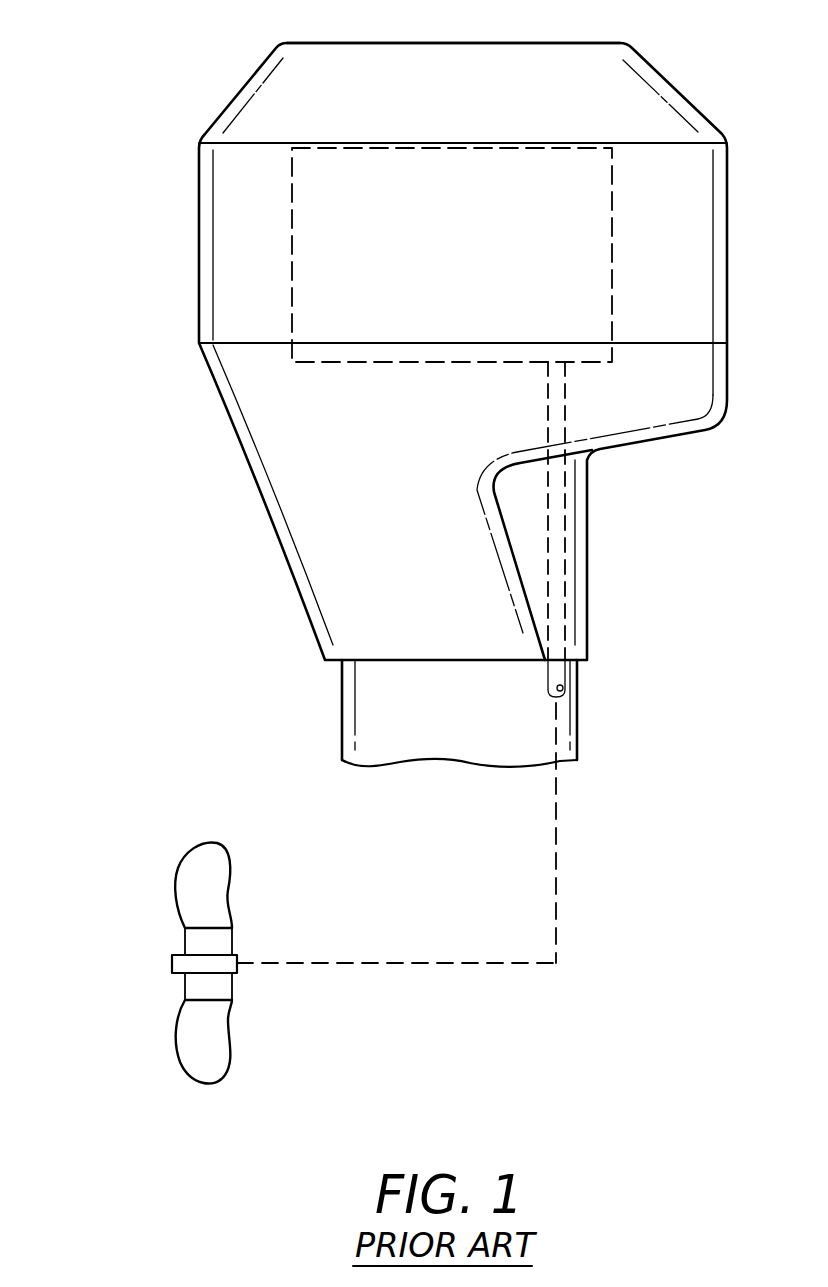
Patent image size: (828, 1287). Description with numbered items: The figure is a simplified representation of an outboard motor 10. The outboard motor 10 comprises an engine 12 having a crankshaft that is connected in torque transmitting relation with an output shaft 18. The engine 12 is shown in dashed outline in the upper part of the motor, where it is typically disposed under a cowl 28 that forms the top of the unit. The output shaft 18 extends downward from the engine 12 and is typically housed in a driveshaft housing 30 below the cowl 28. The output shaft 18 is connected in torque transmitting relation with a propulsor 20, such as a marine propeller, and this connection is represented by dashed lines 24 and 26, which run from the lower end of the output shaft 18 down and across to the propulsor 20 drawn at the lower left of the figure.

The outboard motor 10 is at (118, 101).
The engine 12 is at (613, 212).
The output shaft 18 is at (567, 542).
The propulsor 20 is at (175, 1040).
The dashed line 24 is at (557, 847).
The dashed line 26 is at (378, 968).
The cowl 28 is at (582, 67).
The driveshaft housing 30 is at (342, 710).